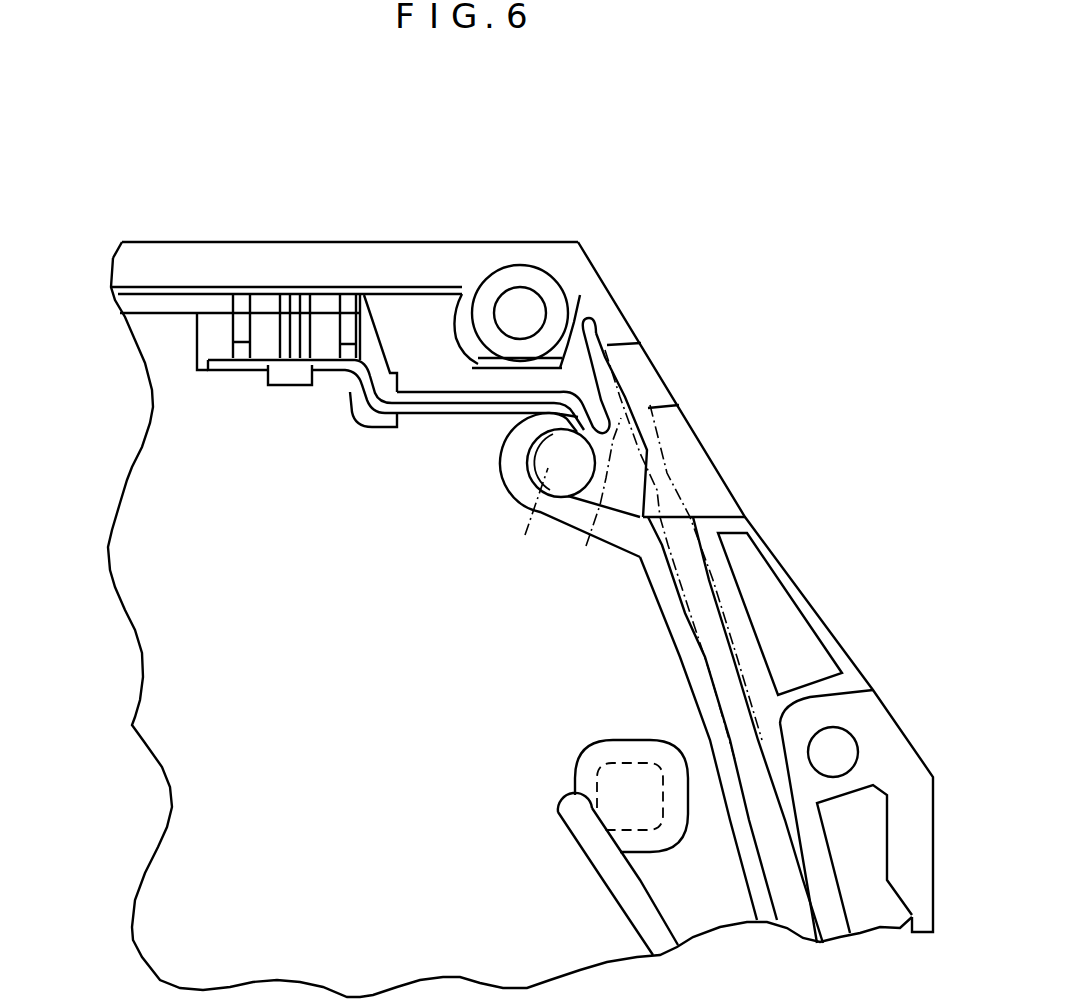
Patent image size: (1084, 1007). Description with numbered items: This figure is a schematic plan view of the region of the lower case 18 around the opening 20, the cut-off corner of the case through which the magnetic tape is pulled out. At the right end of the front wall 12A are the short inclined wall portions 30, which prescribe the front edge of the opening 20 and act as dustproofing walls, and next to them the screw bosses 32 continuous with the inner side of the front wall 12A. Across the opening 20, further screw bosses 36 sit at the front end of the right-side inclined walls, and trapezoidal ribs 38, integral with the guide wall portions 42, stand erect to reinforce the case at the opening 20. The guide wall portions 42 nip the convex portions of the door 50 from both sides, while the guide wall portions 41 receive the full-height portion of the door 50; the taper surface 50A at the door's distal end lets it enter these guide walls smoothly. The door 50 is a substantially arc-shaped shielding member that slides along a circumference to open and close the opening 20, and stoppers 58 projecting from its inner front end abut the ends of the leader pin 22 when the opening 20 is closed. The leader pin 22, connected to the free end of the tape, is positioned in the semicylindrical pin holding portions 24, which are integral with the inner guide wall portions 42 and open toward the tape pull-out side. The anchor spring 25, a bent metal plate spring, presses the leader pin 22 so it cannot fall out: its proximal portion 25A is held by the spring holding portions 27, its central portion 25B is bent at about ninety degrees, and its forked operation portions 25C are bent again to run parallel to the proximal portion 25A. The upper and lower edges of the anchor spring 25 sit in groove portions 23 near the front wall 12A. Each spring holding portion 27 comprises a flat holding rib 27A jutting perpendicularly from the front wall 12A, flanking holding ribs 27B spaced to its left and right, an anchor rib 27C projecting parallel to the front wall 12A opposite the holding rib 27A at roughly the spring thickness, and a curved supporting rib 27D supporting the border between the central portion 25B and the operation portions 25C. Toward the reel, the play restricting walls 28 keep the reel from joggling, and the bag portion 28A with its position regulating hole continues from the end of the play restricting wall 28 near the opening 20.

The lower case 18 is at (655, 162).
The front wall 12A is at (460, 240).
The opening 20 is at (697, 432).
The leader pin 22 is at (525, 535).
The groove portions 23 is at (385, 378).
The pin holding portions 24 is at (508, 478).
The anchor spring 25 is at (448, 413).
The proximal portion 25A is at (246, 363).
The central portion 25B is at (358, 384).
The operation portions 25C is at (582, 318).
The spring holding portions 27 is at (235, 346).
The holding rib 27A is at (297, 297).
The holding ribs 27B is at (243, 300).
The anchor rib 27C is at (280, 385).
The supporting rib 27D is at (374, 422).
The play restricting walls 28 is at (572, 830).
The bag portion 28A is at (585, 766).
The inclined wall portions 30 is at (624, 345).
The screw bosses 32 is at (525, 307).
The screw bosses 36 is at (855, 752).
The ribs 38 is at (815, 615).
The guide wall portions 41 is at (652, 405).
The guide wall portions 42 is at (668, 603).
The door 50 is at (677, 488).
The taper surface 50A is at (612, 325).
The stoppers 58 is at (586, 548).